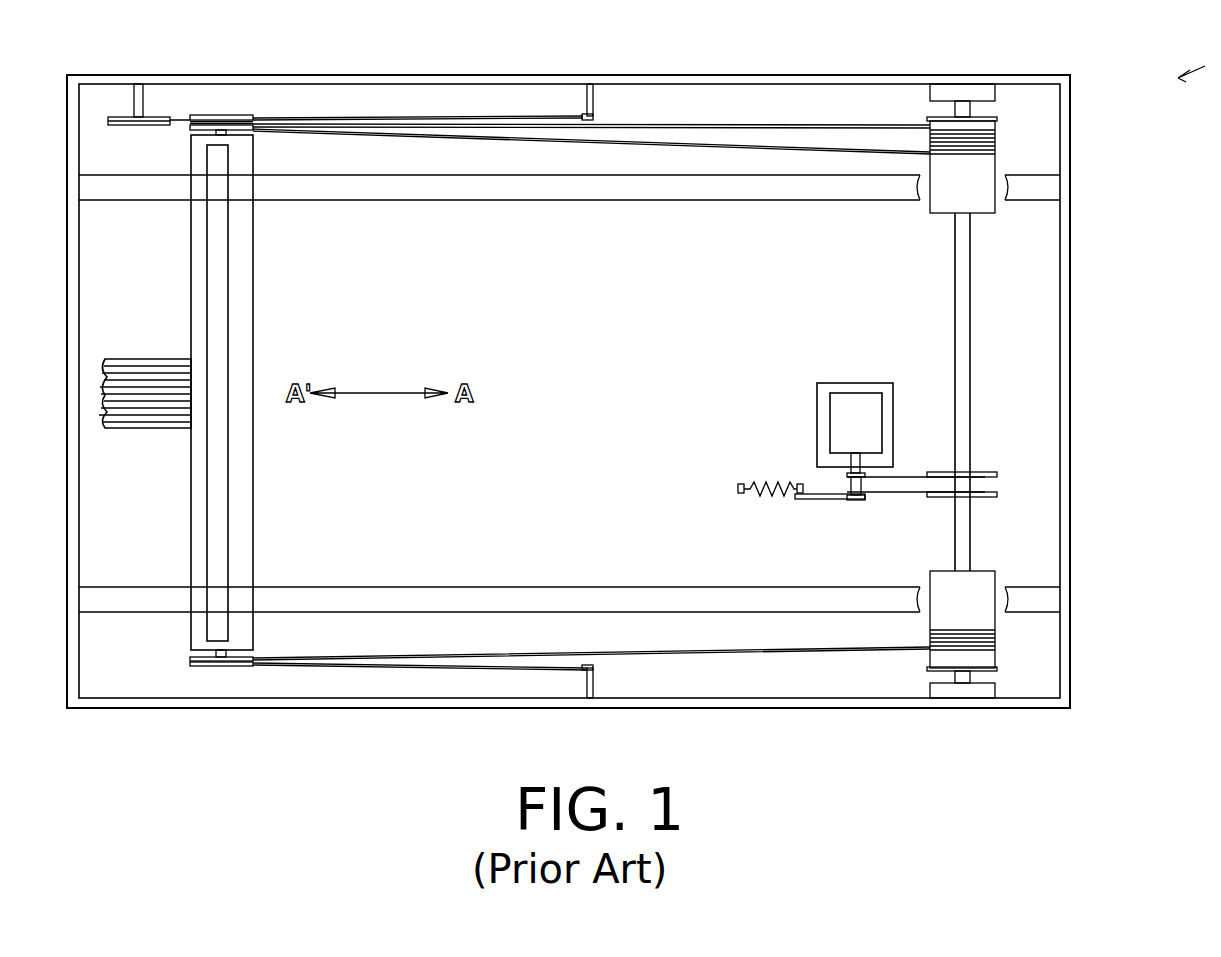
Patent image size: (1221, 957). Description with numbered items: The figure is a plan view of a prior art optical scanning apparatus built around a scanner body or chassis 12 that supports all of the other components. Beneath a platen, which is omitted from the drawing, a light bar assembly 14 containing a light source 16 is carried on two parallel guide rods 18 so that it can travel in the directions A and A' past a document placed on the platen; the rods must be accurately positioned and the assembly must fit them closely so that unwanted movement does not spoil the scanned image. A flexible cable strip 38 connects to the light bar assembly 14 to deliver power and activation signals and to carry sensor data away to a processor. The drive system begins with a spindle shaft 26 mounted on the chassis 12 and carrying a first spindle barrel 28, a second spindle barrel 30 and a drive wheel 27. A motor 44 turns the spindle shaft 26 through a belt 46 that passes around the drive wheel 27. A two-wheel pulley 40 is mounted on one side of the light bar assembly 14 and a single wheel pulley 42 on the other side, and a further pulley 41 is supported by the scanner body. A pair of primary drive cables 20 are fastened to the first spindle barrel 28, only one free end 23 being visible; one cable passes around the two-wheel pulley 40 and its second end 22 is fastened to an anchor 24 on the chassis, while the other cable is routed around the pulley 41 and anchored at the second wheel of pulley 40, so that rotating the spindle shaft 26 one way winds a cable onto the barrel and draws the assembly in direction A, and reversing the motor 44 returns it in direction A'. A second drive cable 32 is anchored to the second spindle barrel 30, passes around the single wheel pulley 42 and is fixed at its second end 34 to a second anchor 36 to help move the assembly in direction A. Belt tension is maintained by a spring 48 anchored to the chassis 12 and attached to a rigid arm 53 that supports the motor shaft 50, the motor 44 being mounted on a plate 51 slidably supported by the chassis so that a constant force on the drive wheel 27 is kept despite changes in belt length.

The scanner body or chassis 12 is at (888, 80).
The light bar assembly 14 is at (250, 458).
The light source 16 is at (222, 505).
The guide rods 18 is at (644, 190).
The primary drive cables 20 is at (455, 120).
The second end of primary drive cable 22 is at (582, 117).
The free end of primary drive cable 23 is at (960, 152).
The anchor 24 is at (596, 105).
The spindle shaft 26 is at (955, 275).
The drive wheel 27 is at (985, 498).
The first spindle barrel 28 is at (988, 213).
The second spindle barrel 30 is at (990, 583).
The second drive cable 32 is at (997, 645).
The second end of second drive cable 34 is at (582, 670).
The second anchor 36 is at (596, 680).
The flexible cable strip 38 is at (142, 358).
The two-wheel pulley 40 is at (244, 113).
The idler pulley 41 is at (136, 126).
The single wheel pulley 42 is at (222, 666).
The motor 44 is at (836, 410).
The belt 46 is at (912, 486).
The spring 48 is at (765, 482).
The motor shaft 50 is at (857, 500).
The plate 51 is at (862, 383).
The rigid arm 53 is at (815, 499).